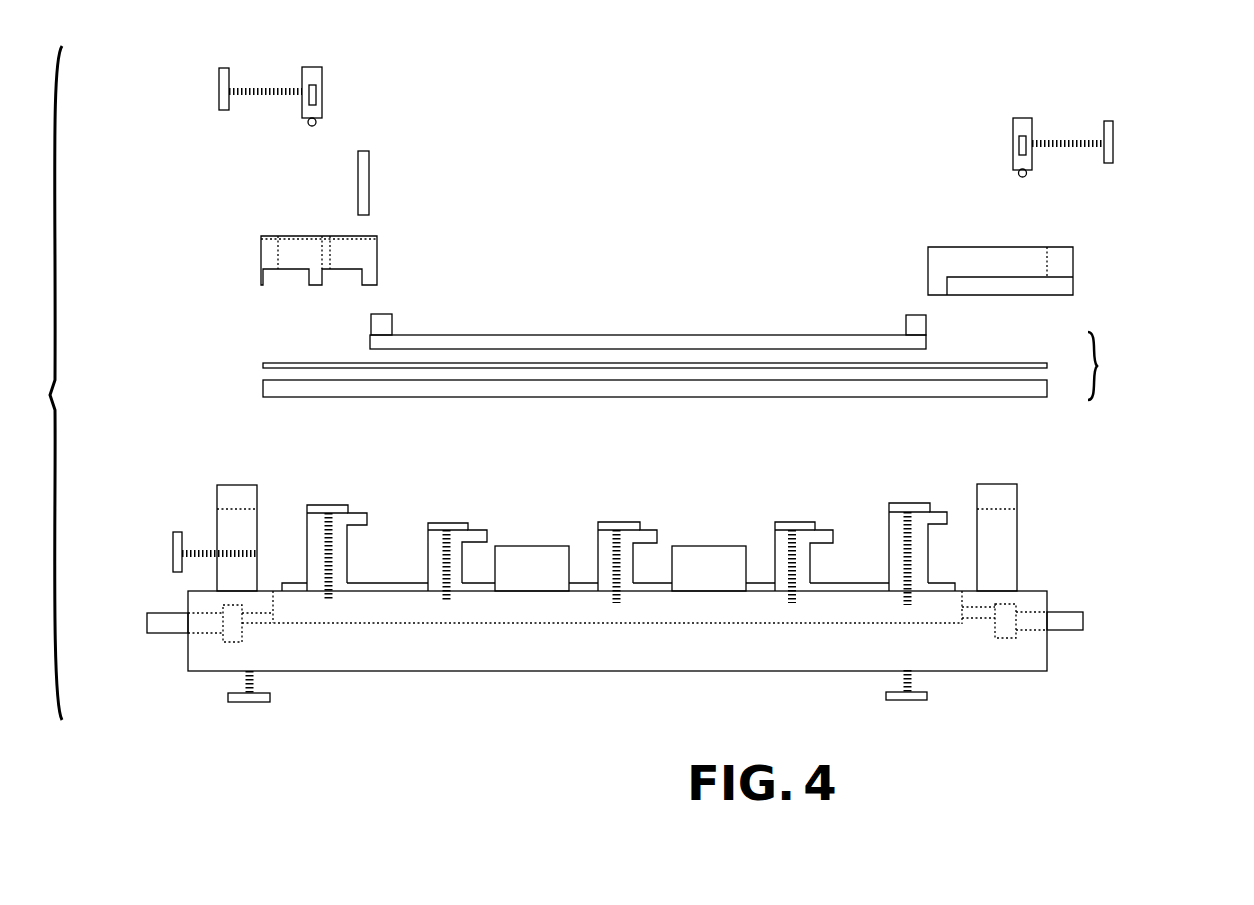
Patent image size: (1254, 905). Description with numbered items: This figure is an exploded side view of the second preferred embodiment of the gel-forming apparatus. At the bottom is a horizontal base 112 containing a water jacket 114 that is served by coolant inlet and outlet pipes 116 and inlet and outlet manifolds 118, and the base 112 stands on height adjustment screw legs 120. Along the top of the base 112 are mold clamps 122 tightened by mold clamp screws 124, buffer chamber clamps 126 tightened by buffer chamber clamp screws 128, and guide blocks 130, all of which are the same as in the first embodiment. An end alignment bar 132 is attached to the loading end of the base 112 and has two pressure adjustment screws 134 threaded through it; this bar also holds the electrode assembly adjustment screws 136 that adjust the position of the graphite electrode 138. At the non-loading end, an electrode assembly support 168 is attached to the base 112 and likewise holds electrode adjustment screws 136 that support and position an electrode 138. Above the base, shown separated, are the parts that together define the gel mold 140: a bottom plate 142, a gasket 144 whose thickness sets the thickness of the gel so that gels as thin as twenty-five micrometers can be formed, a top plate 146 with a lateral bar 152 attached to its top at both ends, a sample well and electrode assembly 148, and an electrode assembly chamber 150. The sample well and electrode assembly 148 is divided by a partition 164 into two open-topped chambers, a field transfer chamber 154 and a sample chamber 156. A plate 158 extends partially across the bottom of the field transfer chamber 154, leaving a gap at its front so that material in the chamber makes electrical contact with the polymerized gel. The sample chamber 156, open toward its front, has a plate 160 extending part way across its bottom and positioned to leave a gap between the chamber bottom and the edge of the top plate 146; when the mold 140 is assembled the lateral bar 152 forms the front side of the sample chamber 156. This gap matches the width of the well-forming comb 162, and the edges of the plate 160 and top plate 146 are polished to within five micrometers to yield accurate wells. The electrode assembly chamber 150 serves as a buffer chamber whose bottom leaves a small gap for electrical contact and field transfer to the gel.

The horizontal base 112 is at (378, 652).
The water jacket 114 is at (498, 607).
The coolant inlet and outlet pipes 116 is at (1068, 617).
The inlet and outlet manifolds 118 is at (1015, 603).
The height adjustment screw legs 120 is at (272, 700).
The mold clamps 122 is at (478, 532).
The mold clamp screws 124 is at (442, 522).
The buffer chamber clamps 126 is at (338, 556).
The buffer chamber clamp screws 128 is at (328, 503).
The guide blocks 130 is at (522, 562).
The end alignment bar 132 is at (218, 535).
The pressure adjustment screws 134 is at (172, 565).
The electrode assembly adjustment screws 136 is at (222, 67).
The graphite electrode 138 is at (316, 63).
The gel mold 140 is at (1120, 366).
The bottom plate 142 is at (1038, 389).
The gasket 144 is at (258, 369).
The top plate 146 is at (665, 340).
The sample well and electrode assembly 148 is at (377, 235).
The electrode assembly chamber 150 is at (1073, 247).
The lateral bar 152 is at (382, 323).
The field transfer chamber 154 is at (293, 257).
The sample chamber 156 is at (360, 255).
The plate 158 is at (287, 277).
The plate 160 is at (339, 277).
The well-forming comb 162 is at (375, 160).
The partition 164 is at (1058, 285).
The electrode assembly support 168 is at (998, 543).